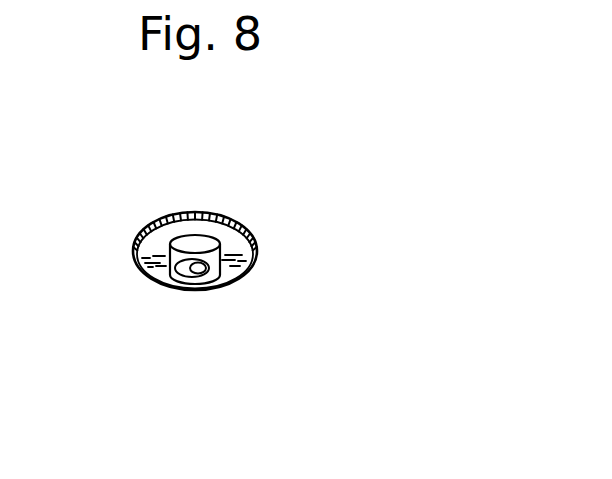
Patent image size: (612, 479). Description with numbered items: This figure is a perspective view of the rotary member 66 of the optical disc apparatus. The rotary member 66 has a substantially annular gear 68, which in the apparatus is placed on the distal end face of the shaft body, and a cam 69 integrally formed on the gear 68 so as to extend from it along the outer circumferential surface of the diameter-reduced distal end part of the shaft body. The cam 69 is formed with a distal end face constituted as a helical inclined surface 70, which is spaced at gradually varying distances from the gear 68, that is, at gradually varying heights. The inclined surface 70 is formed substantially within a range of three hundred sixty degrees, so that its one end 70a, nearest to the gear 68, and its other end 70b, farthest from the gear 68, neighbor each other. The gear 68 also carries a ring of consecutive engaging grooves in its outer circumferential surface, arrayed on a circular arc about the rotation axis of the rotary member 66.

The rotary member 66 is at (143, 230).
The gear 68 is at (253, 242).
The cam 69 is at (255, 262).
The helical inclined surface 70 is at (235, 274).
The one end of the inclined surface 70a is at (197, 263).
The other end of the inclined surface 70b is at (198, 270).